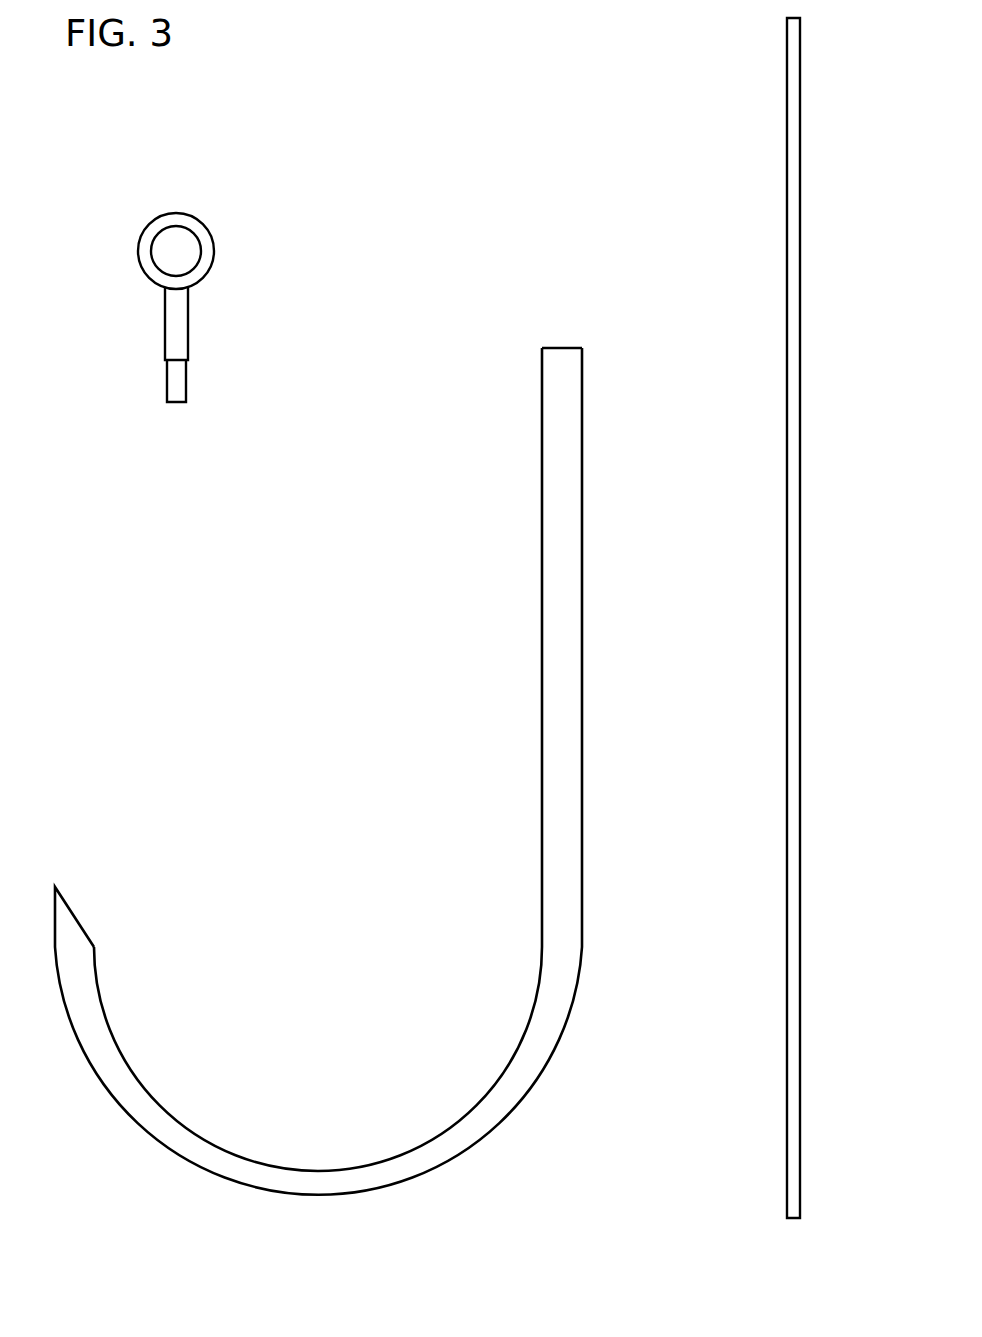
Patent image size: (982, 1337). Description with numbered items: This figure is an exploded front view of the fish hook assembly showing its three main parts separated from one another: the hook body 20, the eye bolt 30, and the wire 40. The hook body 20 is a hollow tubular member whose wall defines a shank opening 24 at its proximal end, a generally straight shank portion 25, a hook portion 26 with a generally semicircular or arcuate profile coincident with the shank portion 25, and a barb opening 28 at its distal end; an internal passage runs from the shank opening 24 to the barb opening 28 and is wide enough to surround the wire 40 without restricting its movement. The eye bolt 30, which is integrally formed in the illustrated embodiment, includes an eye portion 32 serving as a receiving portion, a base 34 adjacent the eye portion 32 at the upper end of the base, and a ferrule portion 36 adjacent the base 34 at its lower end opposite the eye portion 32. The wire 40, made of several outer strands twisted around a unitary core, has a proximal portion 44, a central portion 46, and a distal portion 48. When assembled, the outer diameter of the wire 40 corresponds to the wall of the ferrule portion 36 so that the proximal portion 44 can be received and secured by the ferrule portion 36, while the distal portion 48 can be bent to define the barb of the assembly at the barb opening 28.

The hook body 20 is at (312, 739).
The shank opening 24 is at (561, 347).
The shank portion 25 is at (541, 443).
The hook portion 26 is at (318, 1171).
The barb opening 28 is at (77, 918).
The eye bolt 30 is at (182, 268).
The eye portion 32 is at (207, 268).
The base 34 is at (165, 322).
The ferrule portion 36 is at (187, 395).
The wire 40 is at (778, 618).
The proximal portion 44 is at (801, 35).
The central portion 46 is at (801, 615).
The distal portion 48 is at (801, 1208).